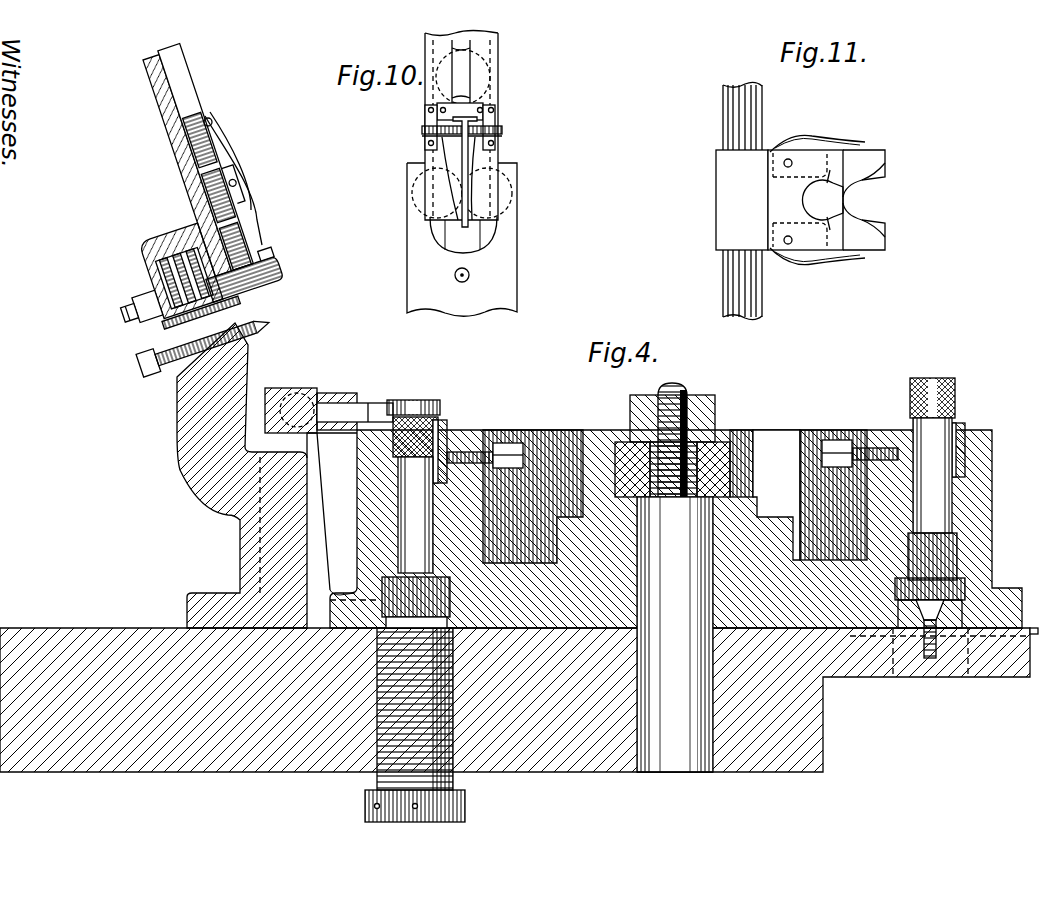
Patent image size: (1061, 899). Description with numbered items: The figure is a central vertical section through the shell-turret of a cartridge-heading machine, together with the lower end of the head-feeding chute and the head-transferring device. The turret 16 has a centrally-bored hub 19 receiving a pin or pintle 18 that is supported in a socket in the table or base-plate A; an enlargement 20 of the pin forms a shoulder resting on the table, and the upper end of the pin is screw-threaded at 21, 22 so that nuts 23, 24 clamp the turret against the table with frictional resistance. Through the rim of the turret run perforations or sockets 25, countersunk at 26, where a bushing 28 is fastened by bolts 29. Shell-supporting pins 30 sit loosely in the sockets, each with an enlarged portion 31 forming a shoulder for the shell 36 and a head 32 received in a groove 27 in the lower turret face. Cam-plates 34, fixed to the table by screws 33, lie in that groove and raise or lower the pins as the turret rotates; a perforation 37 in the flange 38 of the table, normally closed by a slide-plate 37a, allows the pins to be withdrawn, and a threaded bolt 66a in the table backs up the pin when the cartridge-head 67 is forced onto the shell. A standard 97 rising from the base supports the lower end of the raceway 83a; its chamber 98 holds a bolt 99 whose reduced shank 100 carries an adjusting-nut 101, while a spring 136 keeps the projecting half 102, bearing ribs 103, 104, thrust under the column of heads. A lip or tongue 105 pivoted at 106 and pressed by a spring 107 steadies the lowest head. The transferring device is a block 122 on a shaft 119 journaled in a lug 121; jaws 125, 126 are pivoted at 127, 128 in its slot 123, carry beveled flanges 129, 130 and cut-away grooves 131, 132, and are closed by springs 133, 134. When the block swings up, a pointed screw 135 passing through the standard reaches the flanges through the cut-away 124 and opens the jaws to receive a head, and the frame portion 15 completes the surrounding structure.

In FIG. 4, the table or base-plate A is at (138, 628).
In FIG. 4, the frame portion 15 is at (1005, 609).
In FIG. 4, the turret 16 is at (976, 509).
In FIG. 4, the pin or pintle 18 is at (680, 764).
In FIG. 4, the centrally-bored hub 19 is at (745, 502).
In FIG. 4, the enlargement 20 is at (675, 634).
In FIG. 4, the screw-thread 21 is at (684, 469).
In FIG. 4, the screw-thread 22 is at (682, 396).
In FIG. 4, the nut 23 is at (722, 442).
In FIG. 4, the nut 24 is at (715, 405).
In FIG. 4, the perforations or sockets 25 is at (443, 430).
In FIG. 4, the countersink 26 is at (449, 428).
In FIG. 4, the groove 27 is at (398, 580).
In FIG. 4, the bushing 28 is at (447, 426).
In FIG. 4, the bolt 29 is at (512, 448).
In FIG. 4, the shell-supporting pin 30 is at (405, 500).
In FIG. 4, the enlarged portion 31 is at (932, 556).
In FIG. 4, the head 32 is at (930, 605).
In FIG. 4, the pins or screws 33 is at (932, 660).
In FIG. 4, the cam-plate 34 is at (938, 635).
In FIG. 4, the shell 36 is at (440, 425).
In FIG. 4, the perforation 37 is at (962, 676).
In FIG. 4, the slide-plate 37a is at (1035, 628).
In FIG. 4, the flange 38 is at (1027, 651).
In FIG. 4, the screw-threaded bolt 66a is at (390, 775).
In FIG. 4, the cartridge-head 67 is at (425, 400).
In FIG. 4, the raceway 83a is at (152, 97).
In FIG. 10, the raceway 83a is at (495, 66).
In FIG. 4, the standard 97 is at (195, 424).
In FIG. 10, the standard 97 is at (510, 193).
In FIG. 4, the chamber 98 is at (172, 246).
In FIG. 4, the bolt 99 is at (188, 240).
In FIG. 4, the reduced shank 100 is at (126, 312).
In FIG. 4, the adjusting-nut 101 is at (140, 296).
In FIG. 4, the projecting half 102 is at (265, 297).
In FIG. 10, the projecting half 102 is at (483, 237).
In FIG. 4, the rib 103 is at (268, 272).
In FIG. 10, the rib 103 is at (430, 227).
In FIG. 10, the rib 104 is at (487, 222).
In FIG. 4, the lip or tongue 105 is at (273, 288).
In FIG. 10, the lip or tongue 105 is at (467, 240).
In FIG. 4, the pivot 106 is at (238, 184).
In FIG. 10, the pivot 106 is at (475, 126).
In FIG. 4, the spring 107 is at (240, 162).
In FIG. 10, the spring 107 is at (463, 150).
In FIG. 4, the shaft 119 is at (320, 392).
In FIG. 11, the shaft 119 is at (733, 102).
In FIG. 4, the lug 121 is at (324, 487).
In FIG. 4, the block 122 is at (275, 388).
In FIG. 11, the block 122 is at (723, 177).
In FIG. 4, the slot 123 is at (340, 410).
In FIG. 11, the cut-away portion 124 is at (805, 195).
In FIG. 11, the jaw 125 is at (870, 155).
In FIG. 11, the jaw 126 is at (878, 240).
In FIG. 11, the pivot 127 is at (790, 158).
In FIG. 11, the pivot 128 is at (788, 245).
In FIG. 11, the flange 129 is at (827, 177).
In FIG. 11, the flange 130 is at (829, 218).
In FIG. 11, the cut-away or groove 131 is at (886, 183).
In FIG. 11, the cut-away or groove 132 is at (887, 207).
In FIG. 11, the spring 133 is at (813, 140).
In FIG. 11, the spring 134 is at (830, 260).
In FIG. 4, the pointed screw 135 is at (140, 364).
In FIG. 10, the pointed screw 135 is at (469, 275).
In FIG. 4, the spring 136 is at (162, 328).